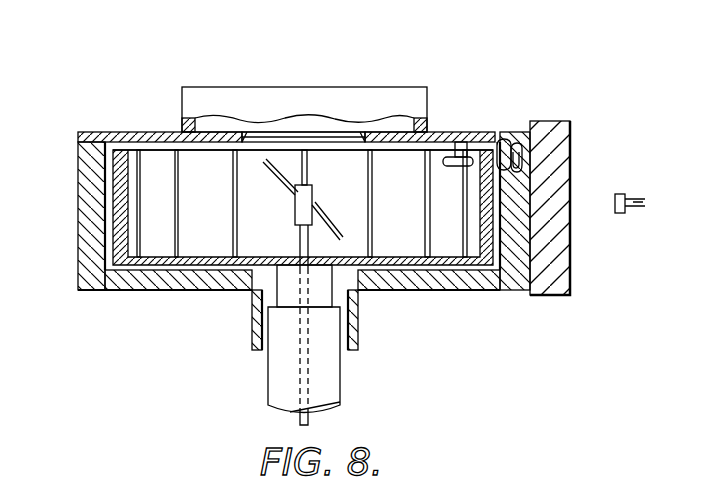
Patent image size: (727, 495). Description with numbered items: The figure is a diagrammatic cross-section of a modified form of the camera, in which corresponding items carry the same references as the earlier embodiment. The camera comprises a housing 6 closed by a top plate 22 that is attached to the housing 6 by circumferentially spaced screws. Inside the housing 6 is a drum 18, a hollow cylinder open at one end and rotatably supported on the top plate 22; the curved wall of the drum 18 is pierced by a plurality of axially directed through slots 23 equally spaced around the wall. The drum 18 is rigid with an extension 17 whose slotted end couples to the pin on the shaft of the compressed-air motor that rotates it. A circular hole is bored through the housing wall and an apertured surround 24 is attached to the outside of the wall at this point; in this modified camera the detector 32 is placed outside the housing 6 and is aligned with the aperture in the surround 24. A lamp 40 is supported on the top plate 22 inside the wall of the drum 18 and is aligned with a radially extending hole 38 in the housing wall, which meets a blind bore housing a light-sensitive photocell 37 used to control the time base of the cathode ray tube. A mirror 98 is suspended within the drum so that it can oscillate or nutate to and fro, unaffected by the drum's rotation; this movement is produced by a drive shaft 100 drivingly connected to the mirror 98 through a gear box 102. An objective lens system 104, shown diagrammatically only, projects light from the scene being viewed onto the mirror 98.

The housing 6 is at (78, 206).
The top plate 22 is at (113, 135).
The drum 18 is at (123, 152).
The through slots 23 is at (140, 250).
The objective lens system 104 is at (395, 85).
The lamp 40 is at (461, 142).
The radially extending hole 38 is at (498, 145).
The photocell 37 is at (519, 165).
The apertured surround 24 is at (563, 210).
The detector 32 is at (618, 214).
The gear box 102 is at (308, 202).
The mirror 98 is at (285, 187).
The extension 17 is at (325, 297).
The drive shaft 100 is at (305, 418).